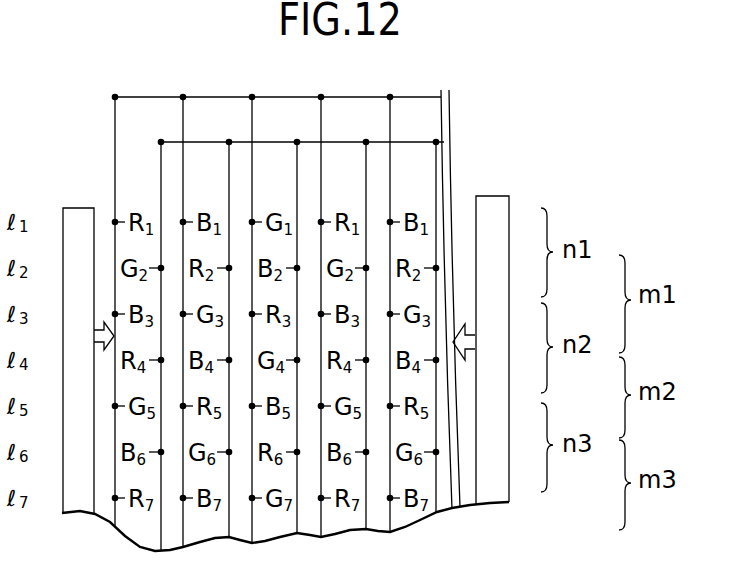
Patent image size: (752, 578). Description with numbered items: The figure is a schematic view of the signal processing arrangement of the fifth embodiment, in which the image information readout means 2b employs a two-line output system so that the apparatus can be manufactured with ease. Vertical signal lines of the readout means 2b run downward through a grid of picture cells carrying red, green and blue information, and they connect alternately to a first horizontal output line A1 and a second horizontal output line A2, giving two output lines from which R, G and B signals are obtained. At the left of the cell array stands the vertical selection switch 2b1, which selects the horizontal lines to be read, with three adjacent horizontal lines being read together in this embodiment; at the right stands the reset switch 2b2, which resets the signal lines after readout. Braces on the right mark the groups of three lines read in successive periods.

The image information readout means 2b is at (180, 94).
The vertical selection switch 2b1 is at (79, 207).
The reset switch 2b2 is at (501, 195).
The first horizontal line A1 is at (450, 97).
The second horizontal line A2 is at (453, 142).